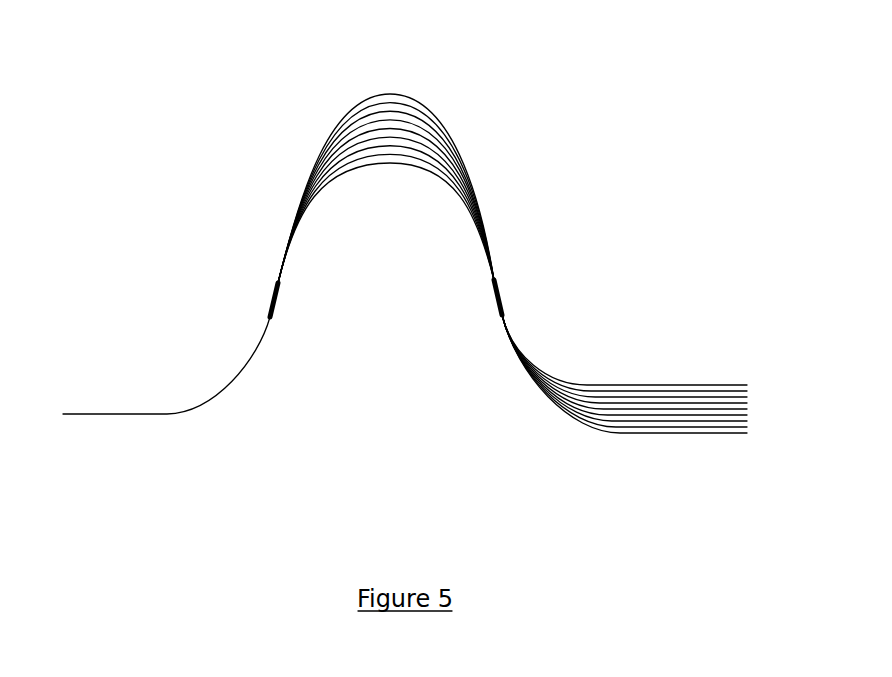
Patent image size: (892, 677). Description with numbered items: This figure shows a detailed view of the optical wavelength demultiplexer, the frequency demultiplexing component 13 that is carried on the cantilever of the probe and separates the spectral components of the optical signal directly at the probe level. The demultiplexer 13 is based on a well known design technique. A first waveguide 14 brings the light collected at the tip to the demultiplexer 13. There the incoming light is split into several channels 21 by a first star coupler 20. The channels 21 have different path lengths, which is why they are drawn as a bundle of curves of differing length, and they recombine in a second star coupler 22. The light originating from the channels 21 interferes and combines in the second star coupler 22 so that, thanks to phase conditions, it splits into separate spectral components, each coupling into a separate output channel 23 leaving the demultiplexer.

The frequency demultiplexing component 13 is at (486, 233).
The first waveguide 14 is at (132, 413).
The first star coupler 20 is at (268, 300).
The channels 21 is at (415, 96).
The second star coupler 22 is at (505, 302).
The output channel 23 is at (667, 386).